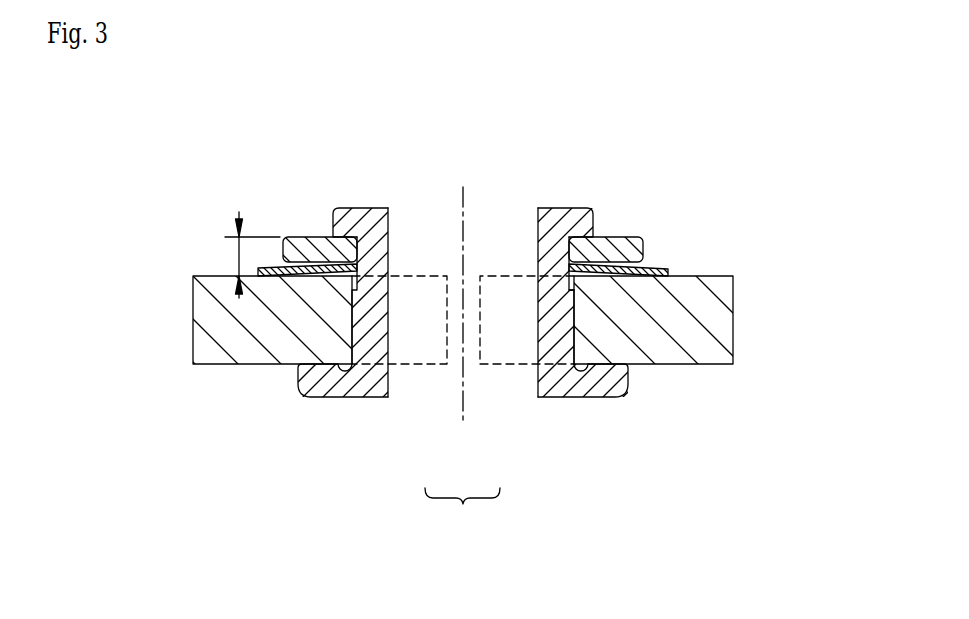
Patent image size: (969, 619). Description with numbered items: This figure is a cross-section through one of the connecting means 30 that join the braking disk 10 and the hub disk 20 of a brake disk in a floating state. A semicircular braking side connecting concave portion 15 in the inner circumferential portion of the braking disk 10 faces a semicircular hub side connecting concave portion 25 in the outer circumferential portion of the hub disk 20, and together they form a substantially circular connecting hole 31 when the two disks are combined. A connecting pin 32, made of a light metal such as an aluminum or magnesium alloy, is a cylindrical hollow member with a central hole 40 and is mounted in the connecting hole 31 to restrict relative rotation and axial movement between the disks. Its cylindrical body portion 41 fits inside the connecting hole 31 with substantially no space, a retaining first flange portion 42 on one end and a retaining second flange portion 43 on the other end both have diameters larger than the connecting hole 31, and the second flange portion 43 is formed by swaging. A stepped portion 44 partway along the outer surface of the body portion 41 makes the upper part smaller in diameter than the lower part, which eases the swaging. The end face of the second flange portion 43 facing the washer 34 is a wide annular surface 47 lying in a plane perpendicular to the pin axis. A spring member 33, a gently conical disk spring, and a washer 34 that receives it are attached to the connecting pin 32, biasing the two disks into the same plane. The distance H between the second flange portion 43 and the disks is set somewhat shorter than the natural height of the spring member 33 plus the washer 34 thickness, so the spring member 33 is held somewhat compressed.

The braking disk 10 is at (723, 273).
The braking side connecting concave portion 15 is at (572, 334).
The hub disk 20 is at (199, 272).
The hub side connecting concave portion 25 is at (352, 339).
The connecting means 30 is at (467, 319).
The connecting hole 31 is at (462, 512).
The connecting pin 32 is at (561, 204).
The spring member 33 is at (651, 267).
The washer 34 is at (606, 236).
The central hole 40 is at (388, 257).
The body portion 41 is at (351, 321).
The first flange portion 42 is at (326, 390).
The second flange portion 43 is at (343, 207).
The stepped portion 44 is at (577, 285).
The annular surface 47 is at (305, 247).
The distance H is at (238, 256).